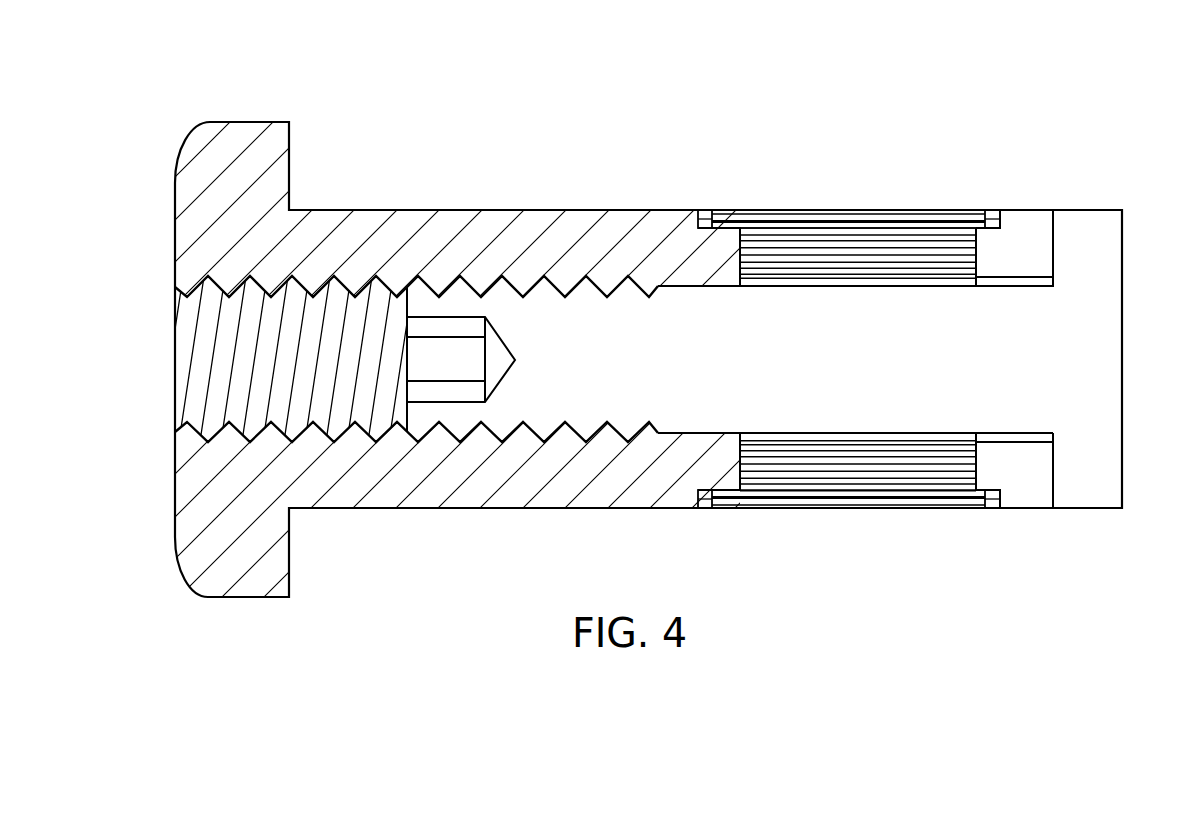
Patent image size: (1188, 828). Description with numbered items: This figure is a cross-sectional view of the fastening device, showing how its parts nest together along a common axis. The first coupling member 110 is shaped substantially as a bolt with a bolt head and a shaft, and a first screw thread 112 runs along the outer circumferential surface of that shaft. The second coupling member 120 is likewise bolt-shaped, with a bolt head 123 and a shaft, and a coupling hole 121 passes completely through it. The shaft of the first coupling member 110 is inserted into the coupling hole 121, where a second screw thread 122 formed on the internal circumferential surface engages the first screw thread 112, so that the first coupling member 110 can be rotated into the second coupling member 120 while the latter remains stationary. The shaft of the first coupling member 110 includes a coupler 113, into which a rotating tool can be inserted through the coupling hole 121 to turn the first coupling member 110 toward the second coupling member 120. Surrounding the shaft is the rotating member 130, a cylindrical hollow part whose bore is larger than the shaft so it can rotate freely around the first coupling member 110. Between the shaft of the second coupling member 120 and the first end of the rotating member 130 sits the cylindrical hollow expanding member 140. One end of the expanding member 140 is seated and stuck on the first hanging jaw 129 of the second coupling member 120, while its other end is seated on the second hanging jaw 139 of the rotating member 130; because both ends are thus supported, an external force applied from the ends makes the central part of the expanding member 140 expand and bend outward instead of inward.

The first coupling member 110 is at (1088, 362).
The first screw thread 112 is at (542, 284).
The coupler 113 is at (473, 358).
The second coupling member 120 is at (455, 232).
The coupling hole 121 is at (240, 358).
The second screw thread 122 is at (250, 438).
The bolt head 123 is at (246, 148).
The first hanging jaw 129 is at (698, 492).
The rotating member 130 is at (1025, 247).
The second hanging jaw 139 is at (1000, 492).
The expanding member 140 is at (844, 210).